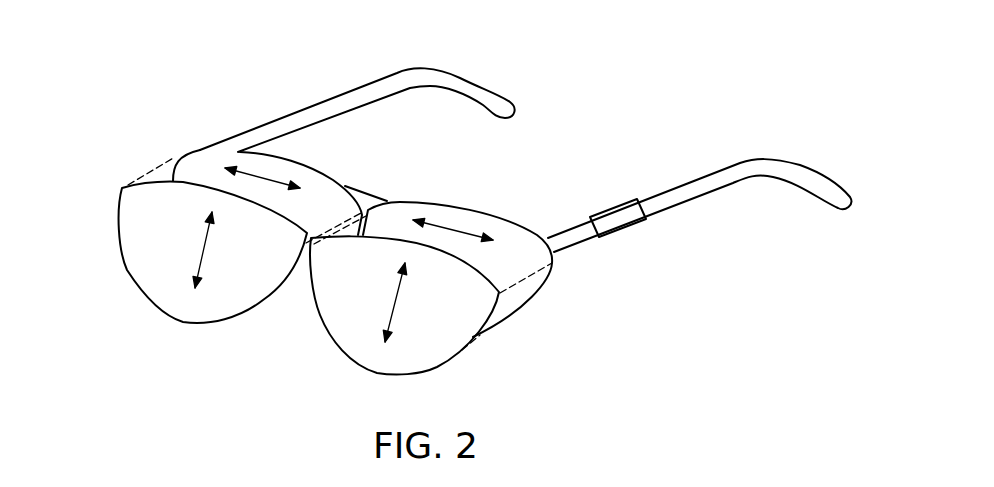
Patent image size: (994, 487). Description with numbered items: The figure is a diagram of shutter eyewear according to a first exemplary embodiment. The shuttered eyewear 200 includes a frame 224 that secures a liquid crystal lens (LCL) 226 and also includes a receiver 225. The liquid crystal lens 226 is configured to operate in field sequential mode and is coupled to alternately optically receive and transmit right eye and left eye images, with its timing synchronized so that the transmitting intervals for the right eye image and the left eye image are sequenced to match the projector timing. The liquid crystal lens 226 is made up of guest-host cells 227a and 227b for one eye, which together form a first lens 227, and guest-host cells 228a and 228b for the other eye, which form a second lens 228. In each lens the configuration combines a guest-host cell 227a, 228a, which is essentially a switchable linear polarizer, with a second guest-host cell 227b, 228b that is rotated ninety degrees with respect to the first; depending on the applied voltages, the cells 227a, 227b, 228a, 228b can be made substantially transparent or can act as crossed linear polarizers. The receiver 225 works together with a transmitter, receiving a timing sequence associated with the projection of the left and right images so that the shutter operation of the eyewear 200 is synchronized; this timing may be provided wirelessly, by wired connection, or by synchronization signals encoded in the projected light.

The shuttered eyewear 200 is at (444, 229).
The frame 224 is at (300, 110).
The receiver 225 is at (615, 208).
The liquid crystal lens 226 is at (111, 136).
The first lens 227 is at (208, 265).
The guest-host cell 227a is at (120, 248).
The second guest-host cell 227b is at (320, 170).
The second lens 228 is at (394, 306).
The guest-host cell 228a is at (320, 330).
The second guest-host cell 228b is at (467, 207).